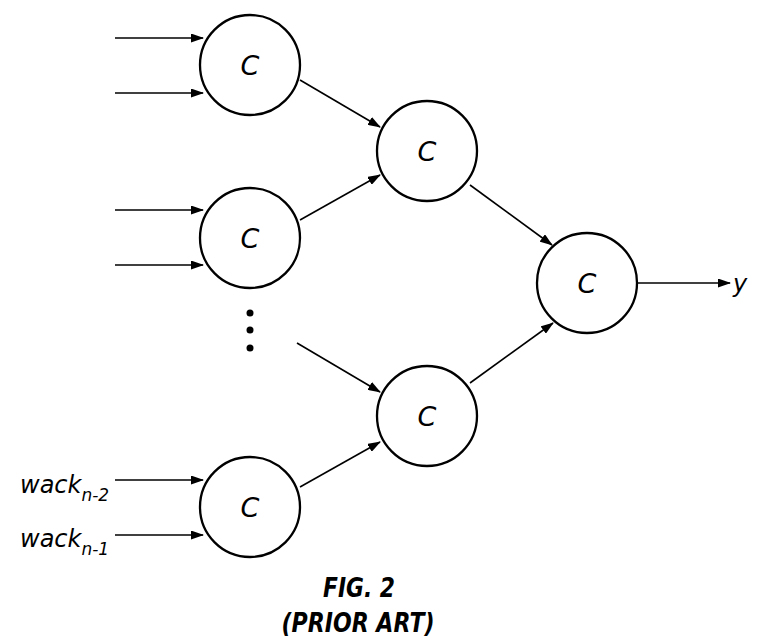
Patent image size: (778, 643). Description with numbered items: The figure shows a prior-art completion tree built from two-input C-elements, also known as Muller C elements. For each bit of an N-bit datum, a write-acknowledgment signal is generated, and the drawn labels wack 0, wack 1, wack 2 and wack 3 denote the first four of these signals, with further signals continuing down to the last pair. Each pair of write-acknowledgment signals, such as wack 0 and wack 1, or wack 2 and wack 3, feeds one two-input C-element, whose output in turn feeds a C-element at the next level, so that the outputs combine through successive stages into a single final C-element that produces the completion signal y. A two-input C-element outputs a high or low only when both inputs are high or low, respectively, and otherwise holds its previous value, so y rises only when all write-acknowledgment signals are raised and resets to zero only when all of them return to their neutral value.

The input wack_ 0 is at (116, 42).
The input wack_ 1 is at (116, 97).
The input wack_ 2 is at (116, 213).
The input wack_ 3 is at (116, 268).